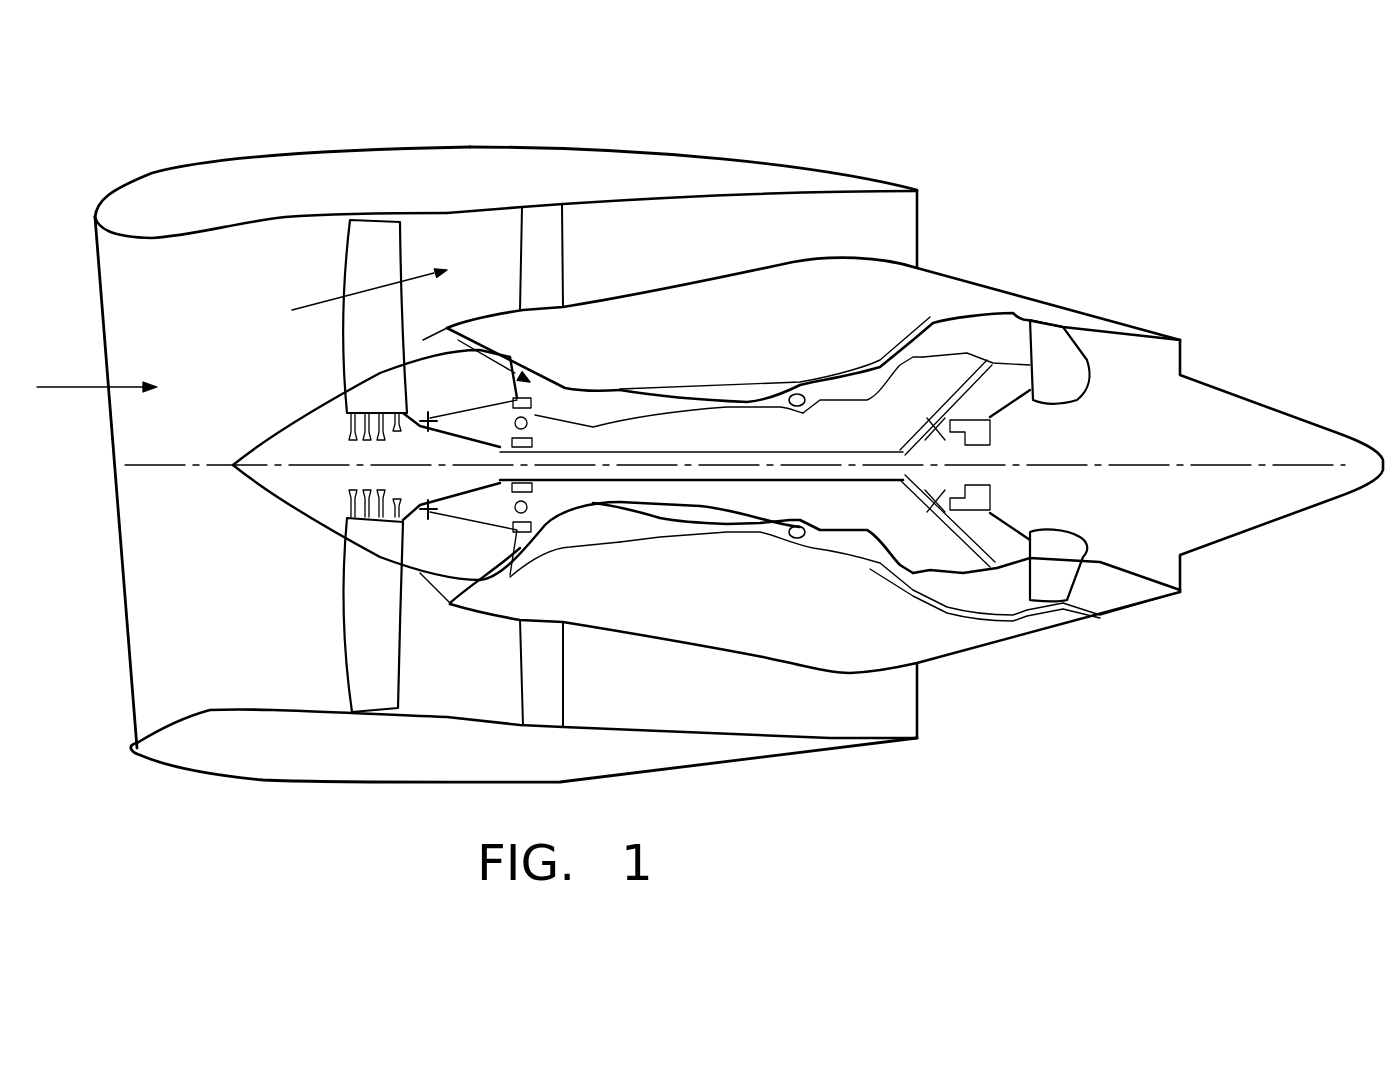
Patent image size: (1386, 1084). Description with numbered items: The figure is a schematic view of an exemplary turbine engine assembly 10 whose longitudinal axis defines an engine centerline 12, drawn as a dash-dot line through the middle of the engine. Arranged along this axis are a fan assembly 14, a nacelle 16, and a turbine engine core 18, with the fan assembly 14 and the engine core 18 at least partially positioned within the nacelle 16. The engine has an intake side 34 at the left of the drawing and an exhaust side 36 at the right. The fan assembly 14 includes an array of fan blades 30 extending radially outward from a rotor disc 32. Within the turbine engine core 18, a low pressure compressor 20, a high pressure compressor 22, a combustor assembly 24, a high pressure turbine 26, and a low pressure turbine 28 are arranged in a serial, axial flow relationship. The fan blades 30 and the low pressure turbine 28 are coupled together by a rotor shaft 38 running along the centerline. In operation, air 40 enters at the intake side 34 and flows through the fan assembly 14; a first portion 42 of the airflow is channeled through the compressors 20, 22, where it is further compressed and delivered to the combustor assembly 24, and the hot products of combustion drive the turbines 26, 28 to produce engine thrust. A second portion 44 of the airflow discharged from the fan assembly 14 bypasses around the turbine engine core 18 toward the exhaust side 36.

The turbine engine assembly 10 is at (1003, 206).
The engine centerline 12 is at (148, 465).
The fan assembly 14 is at (333, 243).
The nacelle 16 is at (545, 180).
The turbine engine core 18 is at (652, 320).
The low pressure compressor 20 is at (583, 402).
The high pressure compressor 22 is at (708, 400).
The combustor assembly 24 is at (795, 545).
The high pressure turbine 26 is at (855, 385).
The low pressure turbine 28 is at (985, 327).
The fan blades 30 is at (378, 668).
The rotor disc 32 is at (372, 535).
The intake side 34 is at (70, 230).
The exhaust side 36 is at (1207, 352).
The rotor shaft 38 is at (663, 452).
The air 40 is at (85, 385).
The first portion of the airflow 42 is at (483, 338).
The second portion of the airflow 44 is at (377, 283).